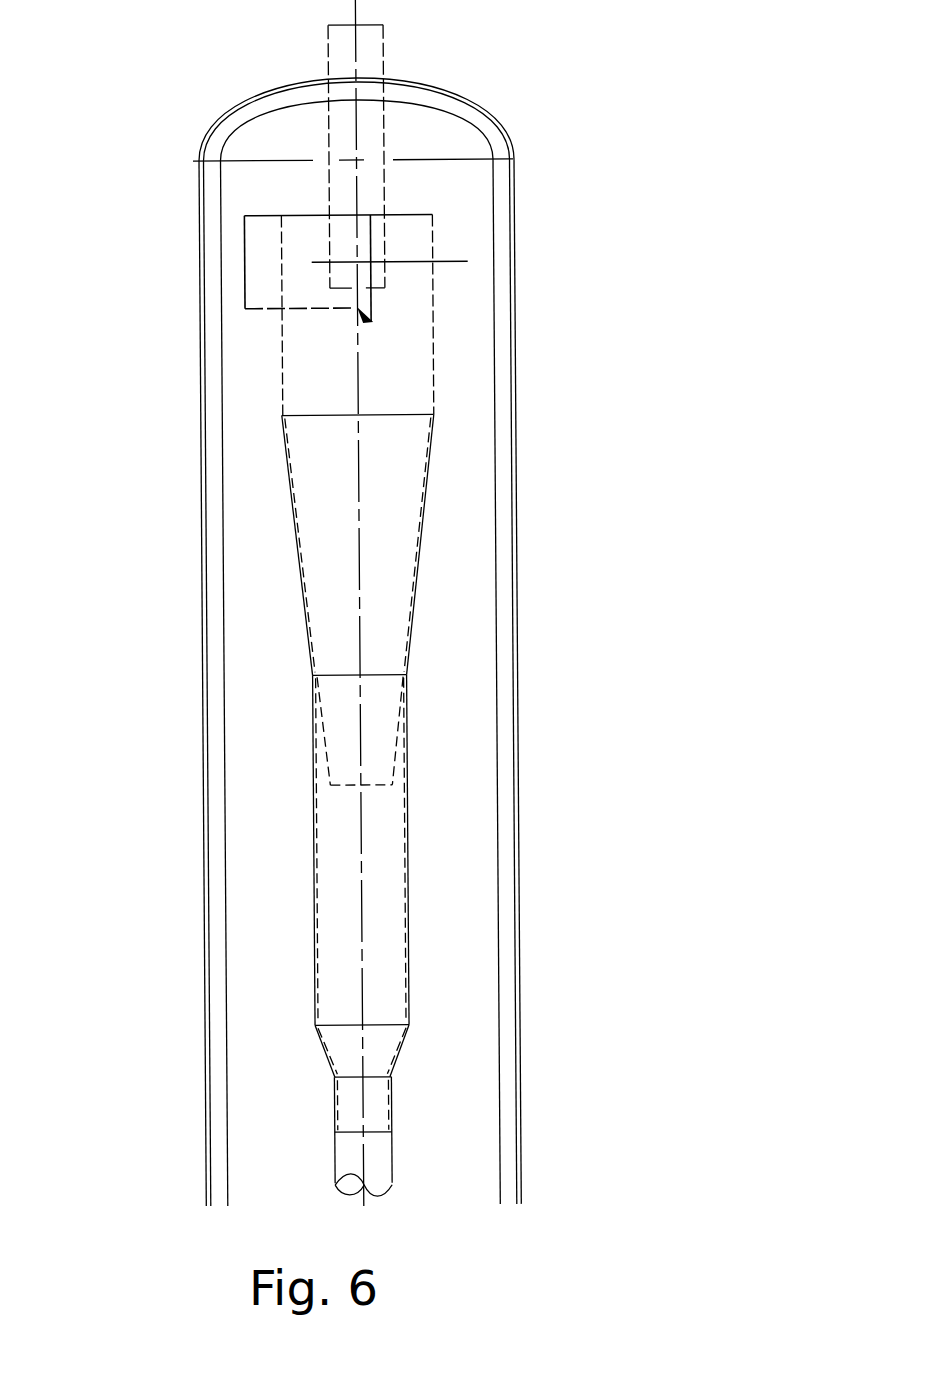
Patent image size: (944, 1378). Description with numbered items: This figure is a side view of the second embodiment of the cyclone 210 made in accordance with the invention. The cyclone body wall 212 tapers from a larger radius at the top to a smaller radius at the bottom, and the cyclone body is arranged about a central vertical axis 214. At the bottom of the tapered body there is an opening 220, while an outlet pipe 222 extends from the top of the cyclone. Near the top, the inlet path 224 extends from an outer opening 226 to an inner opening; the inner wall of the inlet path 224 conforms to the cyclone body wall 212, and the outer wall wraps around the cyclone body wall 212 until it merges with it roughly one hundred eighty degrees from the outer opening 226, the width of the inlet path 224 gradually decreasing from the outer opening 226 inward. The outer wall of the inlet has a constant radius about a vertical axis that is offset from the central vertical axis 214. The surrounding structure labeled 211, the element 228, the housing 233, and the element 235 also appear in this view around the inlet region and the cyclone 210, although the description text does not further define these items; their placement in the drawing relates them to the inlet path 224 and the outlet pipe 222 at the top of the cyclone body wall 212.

The cyclone 210 is at (359, 641).
The vessel wall 211 is at (134, 684).
The cyclone body wall 212 is at (458, 444).
The central vertical axis 214 is at (490, 605).
The opening 220 is at (466, 934).
The outlet pipe 222 is at (277, 144).
The inlet path 224 is at (177, 288).
The outer opening 226 is at (451, 172).
The vane 228 is at (238, 356).
The housing box 233 is at (253, 247).
The bottom plate 235 is at (218, 369).